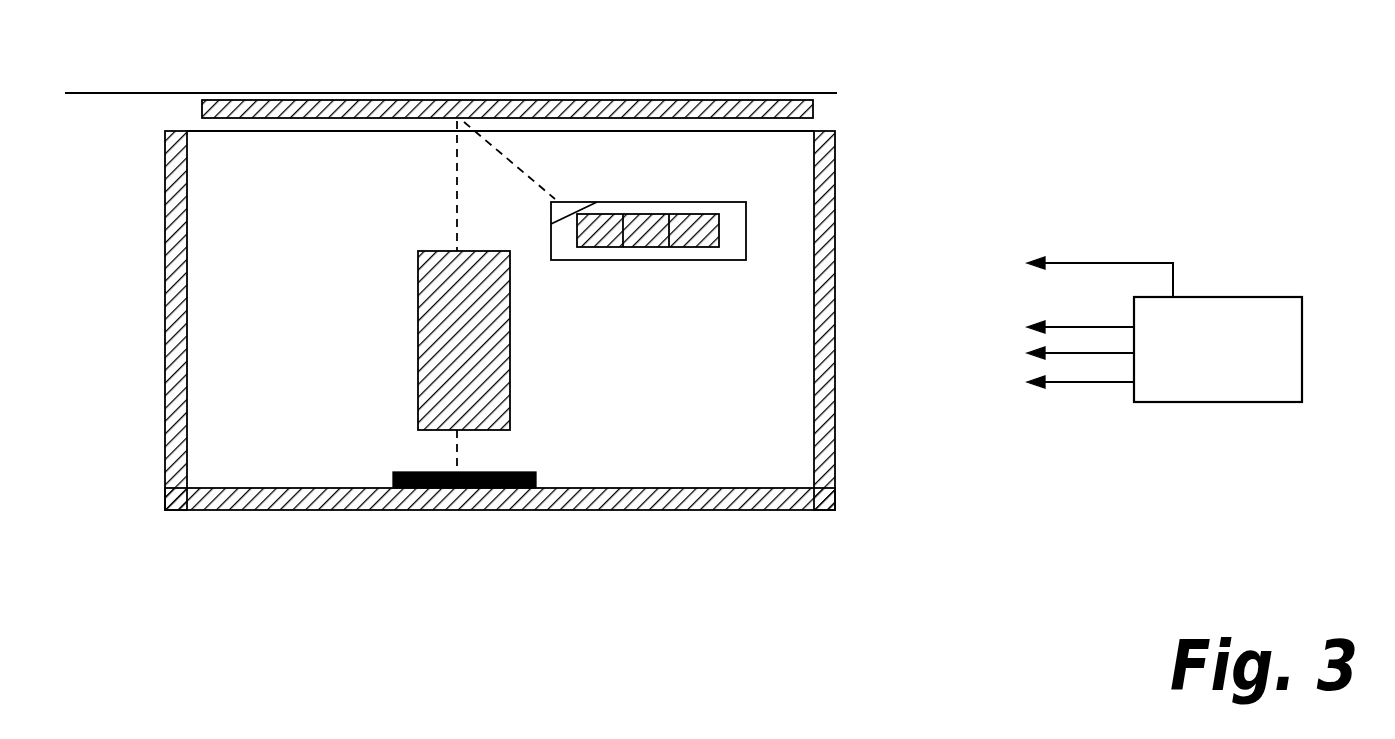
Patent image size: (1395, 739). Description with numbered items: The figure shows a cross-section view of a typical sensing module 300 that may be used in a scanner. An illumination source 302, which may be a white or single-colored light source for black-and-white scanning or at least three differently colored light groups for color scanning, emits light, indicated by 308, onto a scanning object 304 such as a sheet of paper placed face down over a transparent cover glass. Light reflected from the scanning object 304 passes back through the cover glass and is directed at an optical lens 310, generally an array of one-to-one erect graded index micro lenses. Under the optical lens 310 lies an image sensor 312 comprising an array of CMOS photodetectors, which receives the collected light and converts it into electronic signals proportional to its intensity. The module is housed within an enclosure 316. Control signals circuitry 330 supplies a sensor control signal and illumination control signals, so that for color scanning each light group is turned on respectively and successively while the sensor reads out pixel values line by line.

The sensing module 300 is at (831, 537).
The illumination source 302 is at (648, 252).
The scanning object 304 is at (152, 93).
The emitted light 308 is at (520, 170).
The optical lens 310 is at (418, 318).
The image sensor 312 is at (536, 472).
The housing 316 is at (816, 110).
The control signals circuitry 330 is at (1290, 323).